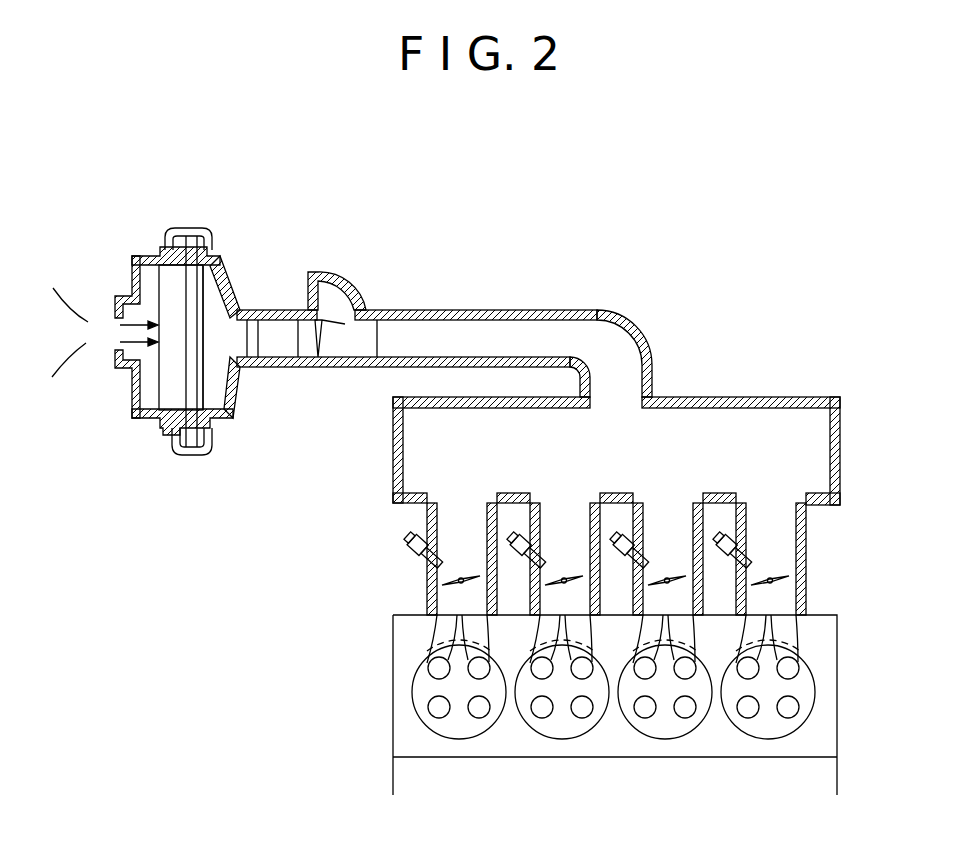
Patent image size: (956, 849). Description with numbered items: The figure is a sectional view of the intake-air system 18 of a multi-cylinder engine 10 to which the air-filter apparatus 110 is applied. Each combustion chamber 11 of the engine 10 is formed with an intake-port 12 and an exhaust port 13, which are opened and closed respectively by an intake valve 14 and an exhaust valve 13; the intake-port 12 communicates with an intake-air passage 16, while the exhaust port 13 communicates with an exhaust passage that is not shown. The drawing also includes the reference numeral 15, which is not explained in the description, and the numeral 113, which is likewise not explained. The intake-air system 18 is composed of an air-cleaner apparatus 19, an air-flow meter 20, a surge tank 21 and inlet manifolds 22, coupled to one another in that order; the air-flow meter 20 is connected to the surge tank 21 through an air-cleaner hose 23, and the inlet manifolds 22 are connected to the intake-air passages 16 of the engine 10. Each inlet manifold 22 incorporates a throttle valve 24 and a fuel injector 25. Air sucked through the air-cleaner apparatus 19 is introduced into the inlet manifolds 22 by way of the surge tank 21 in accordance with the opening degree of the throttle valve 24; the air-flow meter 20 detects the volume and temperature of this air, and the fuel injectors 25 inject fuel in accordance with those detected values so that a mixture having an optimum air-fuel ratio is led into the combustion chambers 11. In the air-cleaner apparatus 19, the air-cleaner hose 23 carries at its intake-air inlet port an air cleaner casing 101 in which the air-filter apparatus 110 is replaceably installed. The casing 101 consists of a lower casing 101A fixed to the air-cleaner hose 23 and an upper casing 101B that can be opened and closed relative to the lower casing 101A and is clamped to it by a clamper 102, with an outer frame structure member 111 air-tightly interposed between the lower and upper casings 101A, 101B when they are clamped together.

The multi-cylinder engine 10 is at (372, 631).
The combustion chamber 11 is at (413, 692).
The intake-port 12 is at (437, 668).
The exhaust port 13 is at (437, 707).
The intake valve 14 is at (479, 668).
The second exhaust valve 15 is at (477, 717).
The intake-air passage 16 is at (494, 622).
The intake-air system 18 is at (727, 353).
The air-cleaner apparatus 19 is at (190, 222).
The air-flow meter 20 is at (357, 297).
The surge tank 21 is at (796, 396).
The inlet manifold 22 is at (427, 522).
The air-cleaner hose 23 is at (610, 313).
The throttle valve 24 is at (437, 583).
The fuel injector 25 is at (408, 545).
The air cleaner casing 101 is at (180, 358).
The lower casing 101A is at (235, 393).
The upper casing 101B is at (130, 383).
The clamper 102 is at (192, 456).
The air-filter apparatus 110 is at (146, 282).
The outer frame structure member 111 is at (198, 298).
The support pin 113 is at (173, 393).